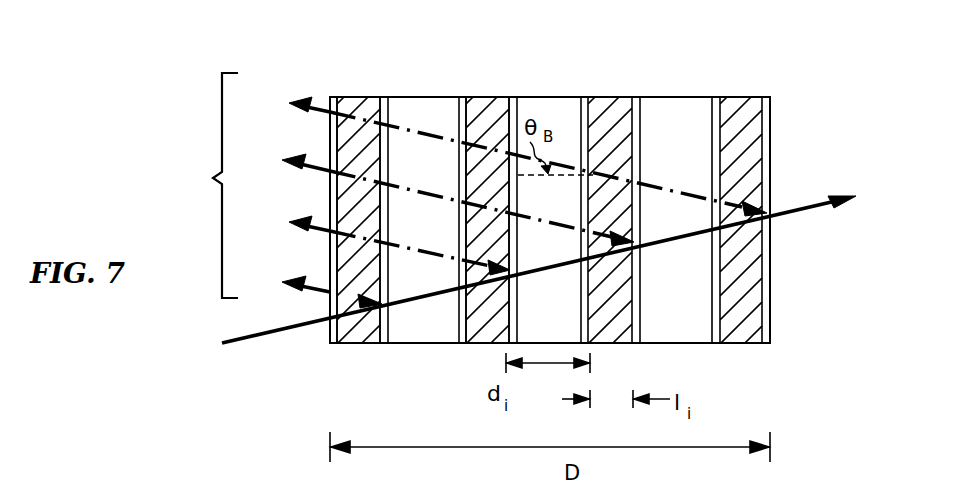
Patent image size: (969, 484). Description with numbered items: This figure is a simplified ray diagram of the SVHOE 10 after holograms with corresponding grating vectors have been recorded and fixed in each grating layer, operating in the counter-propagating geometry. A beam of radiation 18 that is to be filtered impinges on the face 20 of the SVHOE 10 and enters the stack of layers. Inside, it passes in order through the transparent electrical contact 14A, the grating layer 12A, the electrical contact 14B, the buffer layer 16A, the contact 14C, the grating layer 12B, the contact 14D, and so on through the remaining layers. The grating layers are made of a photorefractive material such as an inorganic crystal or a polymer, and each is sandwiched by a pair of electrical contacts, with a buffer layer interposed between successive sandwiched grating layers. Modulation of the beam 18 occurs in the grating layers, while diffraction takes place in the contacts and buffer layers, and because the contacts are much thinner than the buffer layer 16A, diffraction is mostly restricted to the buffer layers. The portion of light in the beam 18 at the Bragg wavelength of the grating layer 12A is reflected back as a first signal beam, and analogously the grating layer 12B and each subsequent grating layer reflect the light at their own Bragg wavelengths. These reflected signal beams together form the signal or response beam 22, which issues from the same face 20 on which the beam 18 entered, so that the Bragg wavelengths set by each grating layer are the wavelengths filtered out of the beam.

The SVHOE 10 is at (730, 57).
The grating layer 12A is at (355, 345).
The grating layer 12B is at (478, 346).
The electrical contact 14A is at (337, 96).
The electrical contact 14B is at (383, 96).
The electrical contact 14C is at (466, 96).
The electrical contact 14D is at (514, 96).
The buffer layer 16A is at (413, 96).
The beam of radiation 18 is at (237, 347).
The face 20 is at (323, 343).
The signal or response beam 22 is at (470, 190).